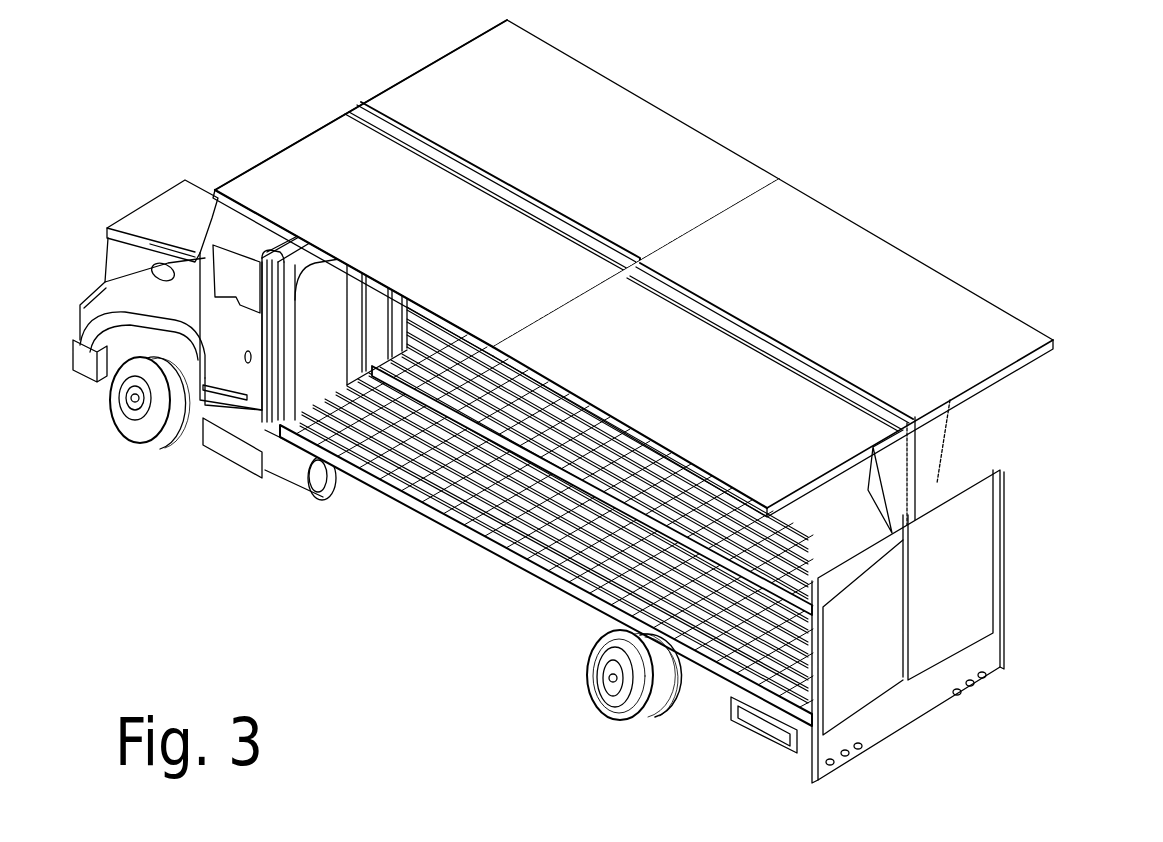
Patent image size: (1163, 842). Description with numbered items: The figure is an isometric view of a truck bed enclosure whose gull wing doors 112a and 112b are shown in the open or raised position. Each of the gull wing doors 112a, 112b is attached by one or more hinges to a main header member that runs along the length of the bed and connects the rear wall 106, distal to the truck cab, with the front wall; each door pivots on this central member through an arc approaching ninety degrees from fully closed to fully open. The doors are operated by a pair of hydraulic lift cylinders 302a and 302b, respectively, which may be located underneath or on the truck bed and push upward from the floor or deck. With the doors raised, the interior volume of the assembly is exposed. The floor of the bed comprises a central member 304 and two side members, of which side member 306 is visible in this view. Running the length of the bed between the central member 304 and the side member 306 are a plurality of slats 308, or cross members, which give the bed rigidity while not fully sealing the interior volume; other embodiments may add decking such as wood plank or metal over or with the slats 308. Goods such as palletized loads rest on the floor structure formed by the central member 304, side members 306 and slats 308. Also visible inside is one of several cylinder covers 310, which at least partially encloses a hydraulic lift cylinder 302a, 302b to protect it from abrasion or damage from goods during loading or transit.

The rear wall 106 is at (843, 693).
The gull wing door 112a is at (853, 248).
The gull wing door 112b is at (322, 150).
The hydraulic lift cylinder 302a is at (933, 493).
The hydraulic lift cylinder 302b is at (873, 488).
The central member 304 is at (562, 486).
The side member 306 is at (575, 579).
The slats 308 is at (432, 478).
The cylinder cover 310 is at (305, 397).